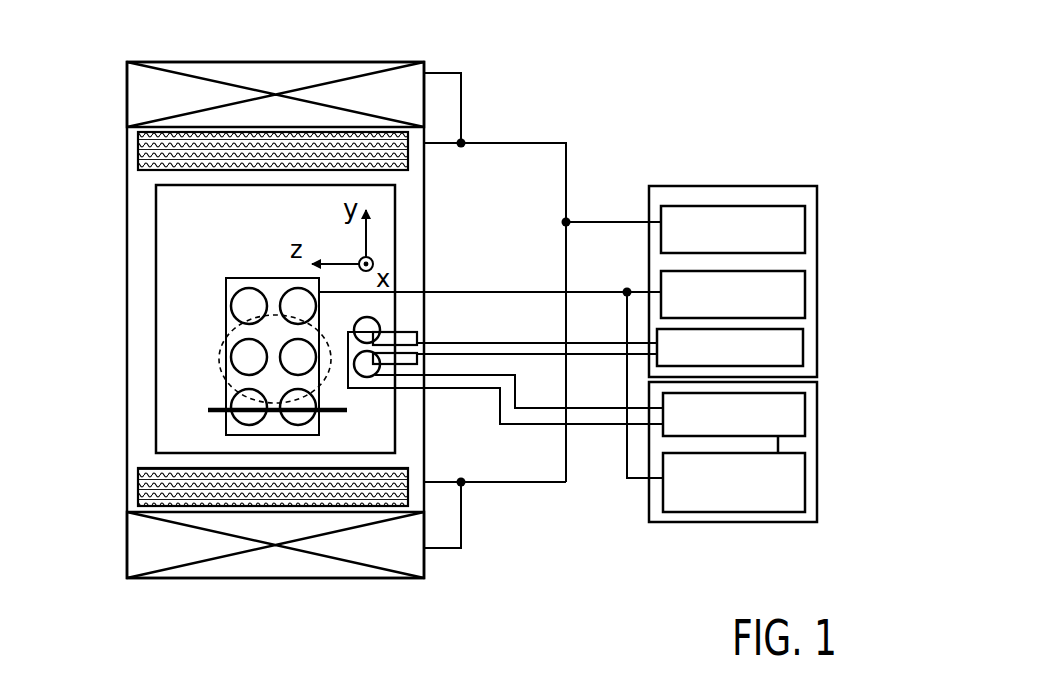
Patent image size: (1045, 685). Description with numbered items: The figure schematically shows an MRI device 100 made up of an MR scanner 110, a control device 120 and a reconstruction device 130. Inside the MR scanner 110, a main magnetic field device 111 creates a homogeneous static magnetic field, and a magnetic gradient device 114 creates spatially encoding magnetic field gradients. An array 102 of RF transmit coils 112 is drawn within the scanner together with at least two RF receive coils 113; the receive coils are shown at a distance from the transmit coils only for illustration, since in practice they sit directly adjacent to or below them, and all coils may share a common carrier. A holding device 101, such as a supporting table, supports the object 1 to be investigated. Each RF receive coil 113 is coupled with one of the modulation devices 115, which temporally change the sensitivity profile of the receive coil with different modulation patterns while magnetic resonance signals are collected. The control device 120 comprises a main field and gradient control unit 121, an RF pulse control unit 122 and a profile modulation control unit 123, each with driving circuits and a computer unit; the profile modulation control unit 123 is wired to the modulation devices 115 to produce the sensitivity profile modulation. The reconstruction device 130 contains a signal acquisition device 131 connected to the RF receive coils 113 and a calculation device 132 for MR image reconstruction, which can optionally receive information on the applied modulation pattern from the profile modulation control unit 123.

The MRI device 100 is at (719, 106).
The MR scanner 110 is at (424, 593).
The main magnetic field device 111 is at (150, 93).
The magnetic gradient device 114 is at (142, 146).
The array of RF transmit coils 102 is at (226, 320).
The RF transmit coils 112 is at (250, 300).
The object 1 is at (222, 368).
The holding device 101 is at (347, 410).
The RF receive coils 113 is at (383, 325).
The modulation devices 115 is at (412, 340).
The control device 120 is at (792, 281).
The main field and gradient control unit 121 is at (733, 229).
The RF pulse control unit 122 is at (733, 294).
The profile modulation control unit 123 is at (730, 348).
The reconstruction device 130 is at (792, 452).
The signal acquisition device 131 is at (734, 414).
The calculation device 132 is at (734, 482).